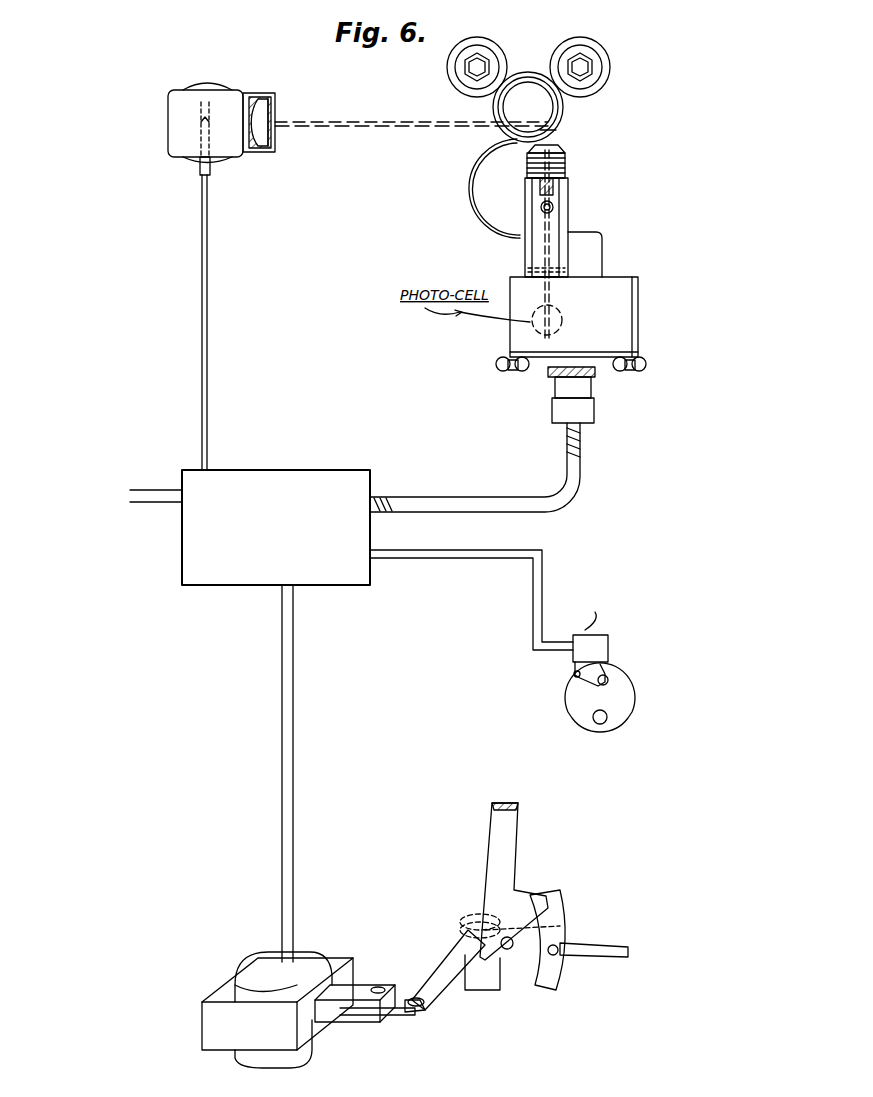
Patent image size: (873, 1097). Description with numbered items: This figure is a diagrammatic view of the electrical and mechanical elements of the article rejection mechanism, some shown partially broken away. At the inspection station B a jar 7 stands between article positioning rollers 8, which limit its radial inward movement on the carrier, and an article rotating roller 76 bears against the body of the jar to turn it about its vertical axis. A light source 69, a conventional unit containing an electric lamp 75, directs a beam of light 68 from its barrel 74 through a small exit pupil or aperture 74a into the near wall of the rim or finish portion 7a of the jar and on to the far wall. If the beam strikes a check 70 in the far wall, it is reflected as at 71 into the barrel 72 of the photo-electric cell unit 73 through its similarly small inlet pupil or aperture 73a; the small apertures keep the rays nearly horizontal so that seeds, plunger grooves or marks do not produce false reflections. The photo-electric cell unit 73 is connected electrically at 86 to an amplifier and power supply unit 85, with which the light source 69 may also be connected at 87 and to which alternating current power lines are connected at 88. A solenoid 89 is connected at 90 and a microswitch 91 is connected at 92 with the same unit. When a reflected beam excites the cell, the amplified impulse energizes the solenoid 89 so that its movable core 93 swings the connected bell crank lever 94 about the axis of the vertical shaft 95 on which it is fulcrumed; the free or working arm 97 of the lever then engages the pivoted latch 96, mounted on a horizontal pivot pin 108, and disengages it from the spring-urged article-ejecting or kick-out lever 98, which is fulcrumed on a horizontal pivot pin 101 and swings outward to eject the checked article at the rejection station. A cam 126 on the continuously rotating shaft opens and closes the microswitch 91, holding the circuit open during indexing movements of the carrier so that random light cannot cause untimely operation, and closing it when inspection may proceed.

The inspection station B is at (526, 24).
The article positioning rollers 8 is at (503, 50).
The jar 7 is at (528, 73).
The rim or finish portion 7a is at (505, 102).
The beam of light 68 is at (425, 130).
The light source 69 is at (228, 152).
The barrel 74 is at (260, 97).
The exit pupil or aperture 74a is at (278, 120).
The electric lamp 75 is at (200, 126).
The check 70 is at (558, 132).
The reflected beam 71 is at (562, 142).
The barrel 72 is at (560, 188).
The article rotating roller 76 is at (479, 205).
The photo-electric cell unit 73 is at (612, 283).
The inlet pupil or aperture 73a is at (545, 268).
The amplifier and power supply unit 85 is at (372, 483).
The electrical connection 86 is at (463, 508).
The electrical connection 87 is at (208, 342).
The power line connection 88 is at (153, 492).
The electrical connection 92 is at (478, 558).
The microswitch 91 is at (608, 645).
The cam 126 is at (632, 728).
The electrical connection 90 is at (294, 748).
The solenoid 89 is at (222, 1000).
The movable core 93 is at (358, 995).
The bell crank lever 94 is at (450, 965).
The vertical shaft 95 is at (468, 916).
The article-ejecting or kick-out lever 98 is at (512, 830).
The pivoted latch 96 is at (556, 918).
The working arm 97 is at (608, 948).
The horizontal pivot pin 101 is at (506, 950).
The horizontal pivot pin 108 is at (560, 962).